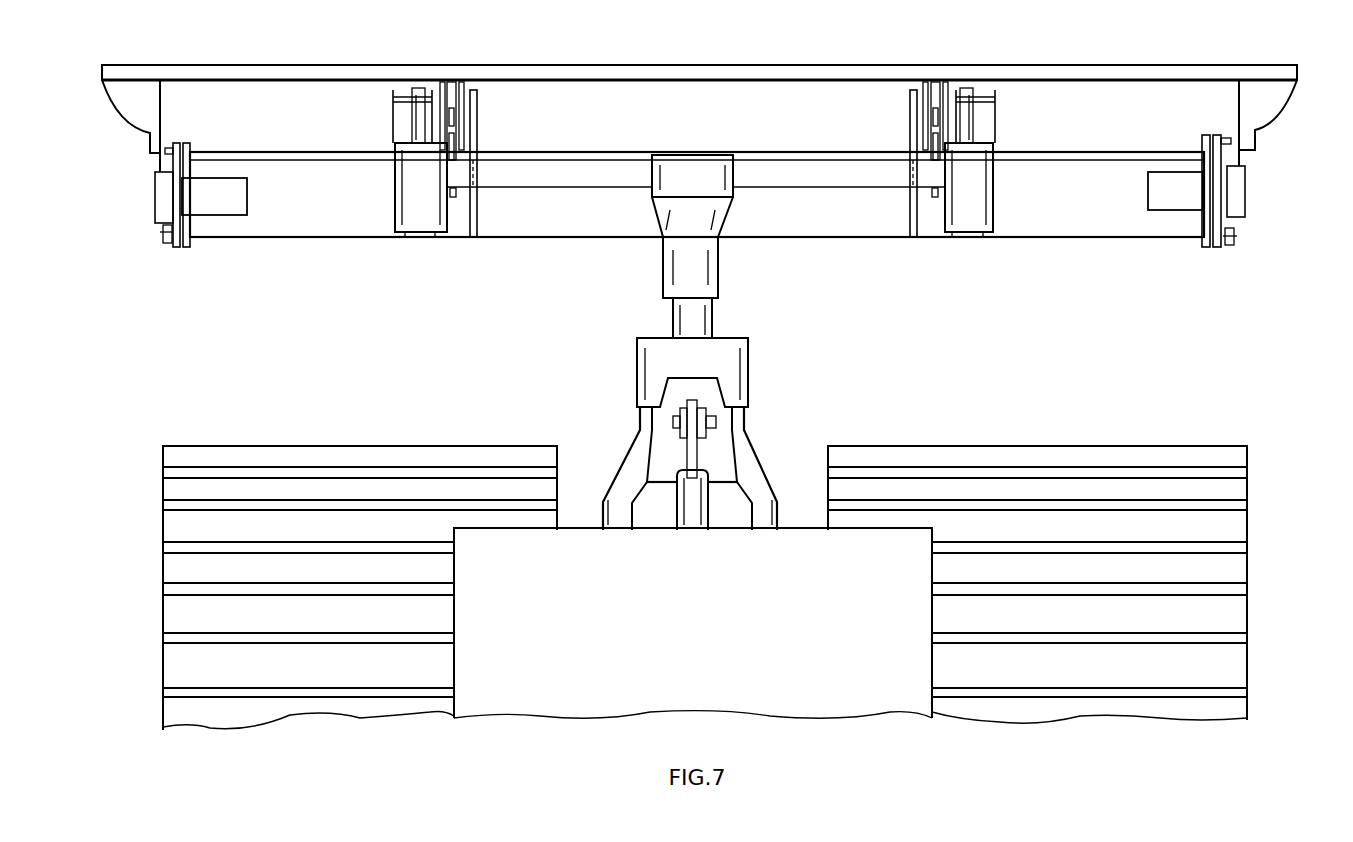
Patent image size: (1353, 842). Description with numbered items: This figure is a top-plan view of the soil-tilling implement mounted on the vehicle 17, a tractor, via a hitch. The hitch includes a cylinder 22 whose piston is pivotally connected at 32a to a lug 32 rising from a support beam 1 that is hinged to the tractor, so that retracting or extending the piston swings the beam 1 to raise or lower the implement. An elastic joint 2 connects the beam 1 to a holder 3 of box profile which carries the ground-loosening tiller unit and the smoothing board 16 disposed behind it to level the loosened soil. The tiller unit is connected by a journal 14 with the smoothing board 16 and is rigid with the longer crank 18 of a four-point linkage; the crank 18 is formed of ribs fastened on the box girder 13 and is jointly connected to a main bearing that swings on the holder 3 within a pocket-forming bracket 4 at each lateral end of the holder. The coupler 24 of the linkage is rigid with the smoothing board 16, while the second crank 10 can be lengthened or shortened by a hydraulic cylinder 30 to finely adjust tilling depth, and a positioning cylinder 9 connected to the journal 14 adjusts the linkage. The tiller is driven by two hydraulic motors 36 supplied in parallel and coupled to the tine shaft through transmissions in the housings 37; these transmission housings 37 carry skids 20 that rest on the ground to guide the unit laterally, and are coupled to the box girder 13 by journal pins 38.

The support beam 1 is at (655, 430).
The elastic joint 2 is at (700, 275).
The holder 3 is at (525, 175).
The bracket 4 is at (400, 215).
The positioning cylinder 9 is at (412, 128).
The second crank 10 is at (453, 117).
The box girder 13 is at (300, 220).
The journal 14 is at (405, 97).
The smoothing board 16 is at (1120, 103).
The vehicle 17 is at (679, 625).
The crank 18 is at (470, 215).
The skids 20 is at (175, 243).
The cylinder 22 is at (695, 505).
The coupler 24 is at (443, 85).
The hydraulic cylinder 30 is at (453, 147).
The lug 32 is at (700, 402).
The pivotal connection 32a is at (715, 418).
The hydraulic motors 36 is at (230, 205).
The transmission housings 37 is at (163, 195).
The journal pins 38 is at (183, 143).